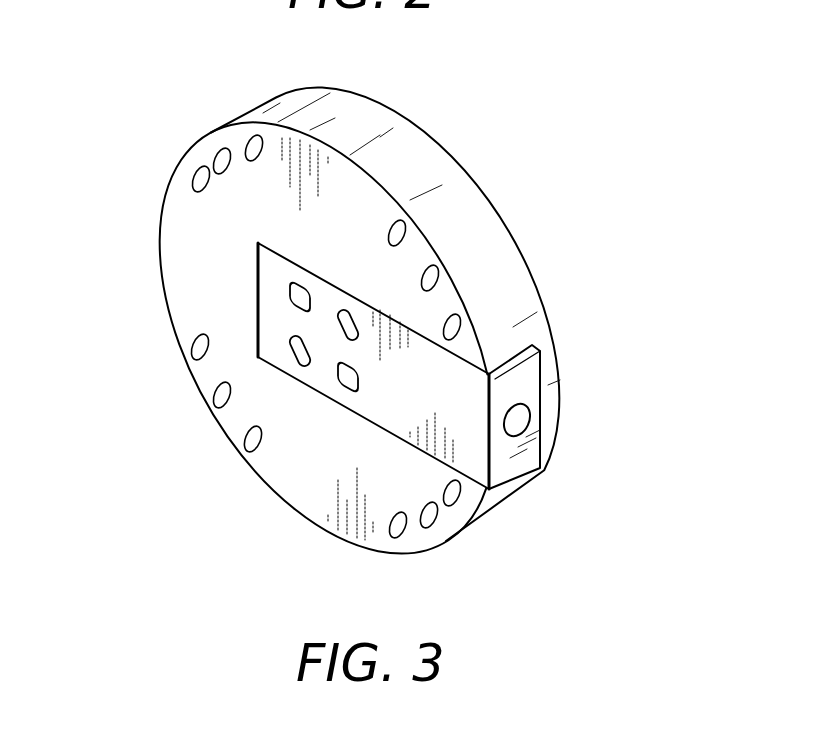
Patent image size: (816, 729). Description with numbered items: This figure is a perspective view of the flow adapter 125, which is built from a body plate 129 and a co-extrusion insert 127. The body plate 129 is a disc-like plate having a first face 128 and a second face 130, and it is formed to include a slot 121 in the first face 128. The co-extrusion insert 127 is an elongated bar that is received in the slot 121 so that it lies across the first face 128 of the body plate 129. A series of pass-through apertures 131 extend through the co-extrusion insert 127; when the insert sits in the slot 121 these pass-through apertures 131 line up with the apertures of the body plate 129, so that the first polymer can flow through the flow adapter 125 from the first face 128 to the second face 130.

The slot 121 is at (350, 410).
The flow adapter 125 is at (150, 116).
The co-extrusion insert 127 is at (454, 364).
The first face 128 is at (277, 179).
The body plate 129 is at (402, 99).
The second face 130 is at (443, 142).
The pass-through apertures 131 is at (344, 308).